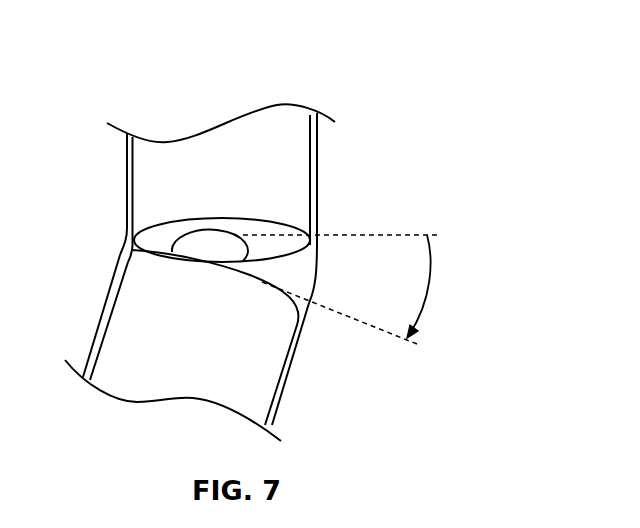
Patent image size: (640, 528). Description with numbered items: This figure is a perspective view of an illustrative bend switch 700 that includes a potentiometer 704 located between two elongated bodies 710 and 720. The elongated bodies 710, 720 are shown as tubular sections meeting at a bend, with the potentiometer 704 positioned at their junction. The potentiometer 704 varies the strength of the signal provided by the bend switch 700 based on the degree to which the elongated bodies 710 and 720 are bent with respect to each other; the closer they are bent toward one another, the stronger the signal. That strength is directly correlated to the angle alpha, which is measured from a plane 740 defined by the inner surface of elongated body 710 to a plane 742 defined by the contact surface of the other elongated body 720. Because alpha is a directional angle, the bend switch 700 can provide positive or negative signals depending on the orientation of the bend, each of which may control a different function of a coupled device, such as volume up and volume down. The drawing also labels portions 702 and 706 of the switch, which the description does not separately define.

The bend switch 700 is at (137, 70).
The first tubular portion 702 is at (123, 157).
The potentiometer 704 is at (210, 250).
The second tubular portion 706 is at (97, 340).
The elongated body 710 is at (302, 156).
The elongated body 720 is at (262, 388).
The plane 740 is at (419, 233).
The plane 742 is at (417, 344).